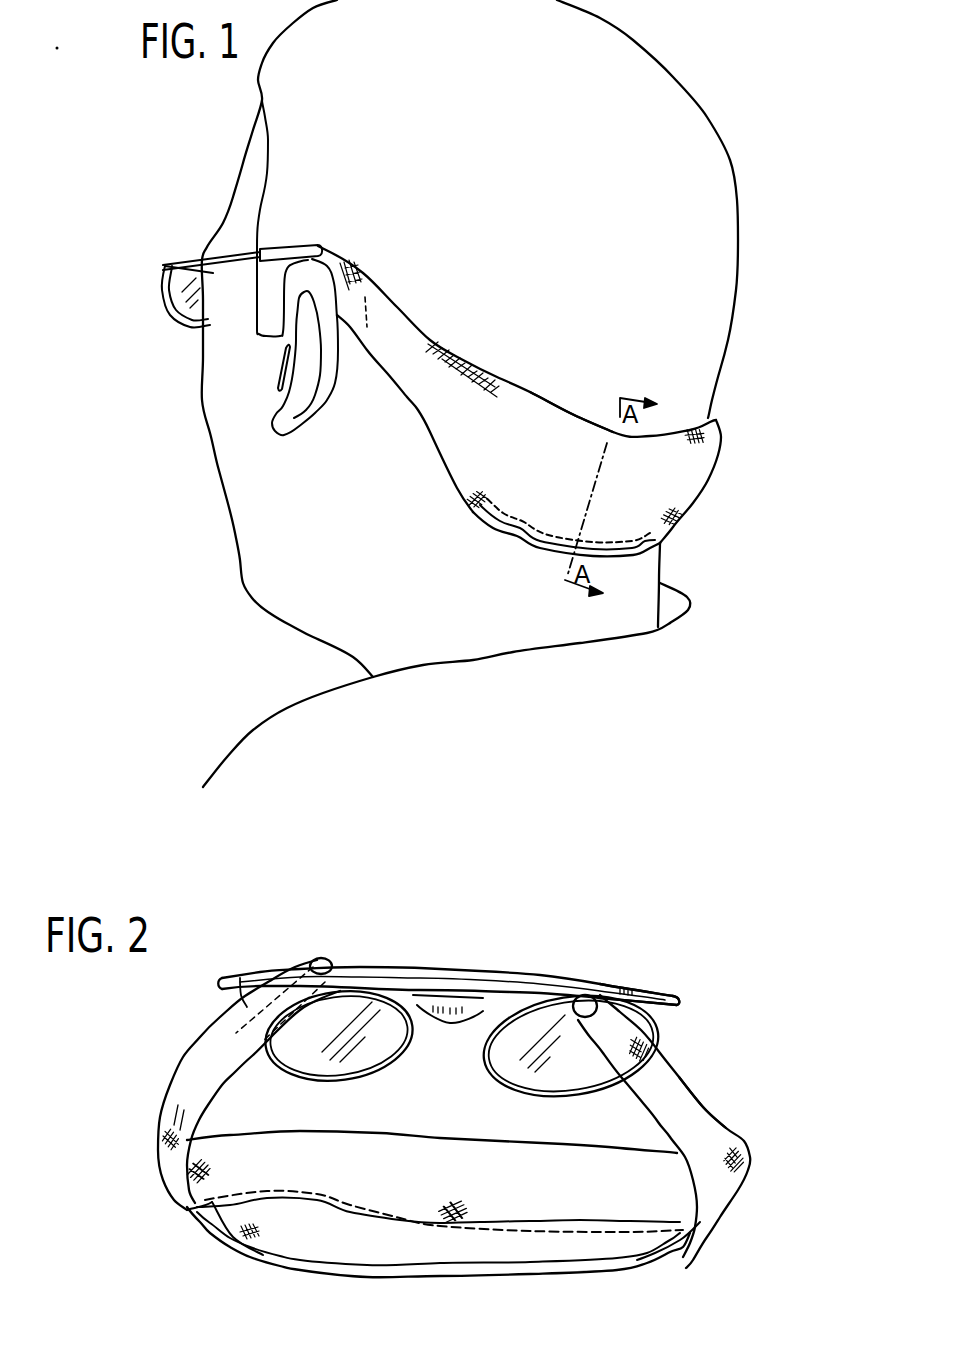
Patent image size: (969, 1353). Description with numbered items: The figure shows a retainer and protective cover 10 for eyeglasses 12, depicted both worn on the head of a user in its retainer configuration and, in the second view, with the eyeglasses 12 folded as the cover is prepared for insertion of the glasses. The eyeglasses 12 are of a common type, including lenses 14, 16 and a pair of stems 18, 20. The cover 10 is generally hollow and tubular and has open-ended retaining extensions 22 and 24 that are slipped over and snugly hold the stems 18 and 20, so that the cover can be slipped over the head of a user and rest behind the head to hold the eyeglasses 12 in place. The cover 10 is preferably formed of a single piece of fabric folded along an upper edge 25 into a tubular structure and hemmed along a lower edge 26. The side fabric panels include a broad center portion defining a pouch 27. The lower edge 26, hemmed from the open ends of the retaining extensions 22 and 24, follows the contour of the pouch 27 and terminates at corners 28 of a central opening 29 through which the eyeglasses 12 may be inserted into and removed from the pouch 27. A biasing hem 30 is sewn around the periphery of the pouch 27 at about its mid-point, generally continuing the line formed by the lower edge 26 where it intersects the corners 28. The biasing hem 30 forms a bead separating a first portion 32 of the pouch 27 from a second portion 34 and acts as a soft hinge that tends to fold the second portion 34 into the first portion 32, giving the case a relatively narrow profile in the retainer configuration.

In FIG. 1, the retainer and protective cover 10 is at (740, 440).
In FIG. 2, the retainer and protective cover 10 is at (750, 1125).
In FIG. 1, the eyeglasses 12 is at (208, 284).
In FIG. 2, the eyeglasses 12 is at (481, 1005).
In FIG. 1, the lens 14 is at (193, 318).
In FIG. 2, the lens 14 is at (340, 997).
In FIG. 2, the lens 16 is at (643, 1027).
In FIG. 1, the stem 18 is at (195, 262).
In FIG. 2, the stem 18 is at (240, 975).
In FIG. 2, the stem 20 is at (632, 990).
In FIG. 1, the retaining extension 22 is at (333, 250).
In FIG. 2, the retaining extension 22 is at (667, 1102).
In FIG. 2, the retaining extension 24 is at (187, 1090).
In FIG. 1, the upper edge 25 is at (537, 393).
In FIG. 2, the upper edge 25 is at (373, 1133).
In FIG. 1, the lower edge 26 is at (457, 490).
In FIG. 2, the lower edge 26 is at (185, 1205).
In FIG. 1, the pouch 27 is at (683, 486).
In FIG. 2, the pouch 27 is at (657, 1210).
In FIG. 1, the corner 28 is at (488, 533).
In FIG. 2, the corner 28 is at (233, 1237).
In FIG. 2, the central opening 29 is at (593, 1252).
In FIG. 1, the biasing hem 30 is at (530, 537).
In FIG. 2, the biasing hem 30 is at (397, 1273).
In FIG. 1, the first portion 32 is at (457, 447).
In FIG. 2, the first portion 32 is at (212, 1202).
In FIG. 2, the second portion 34 is at (307, 1242).